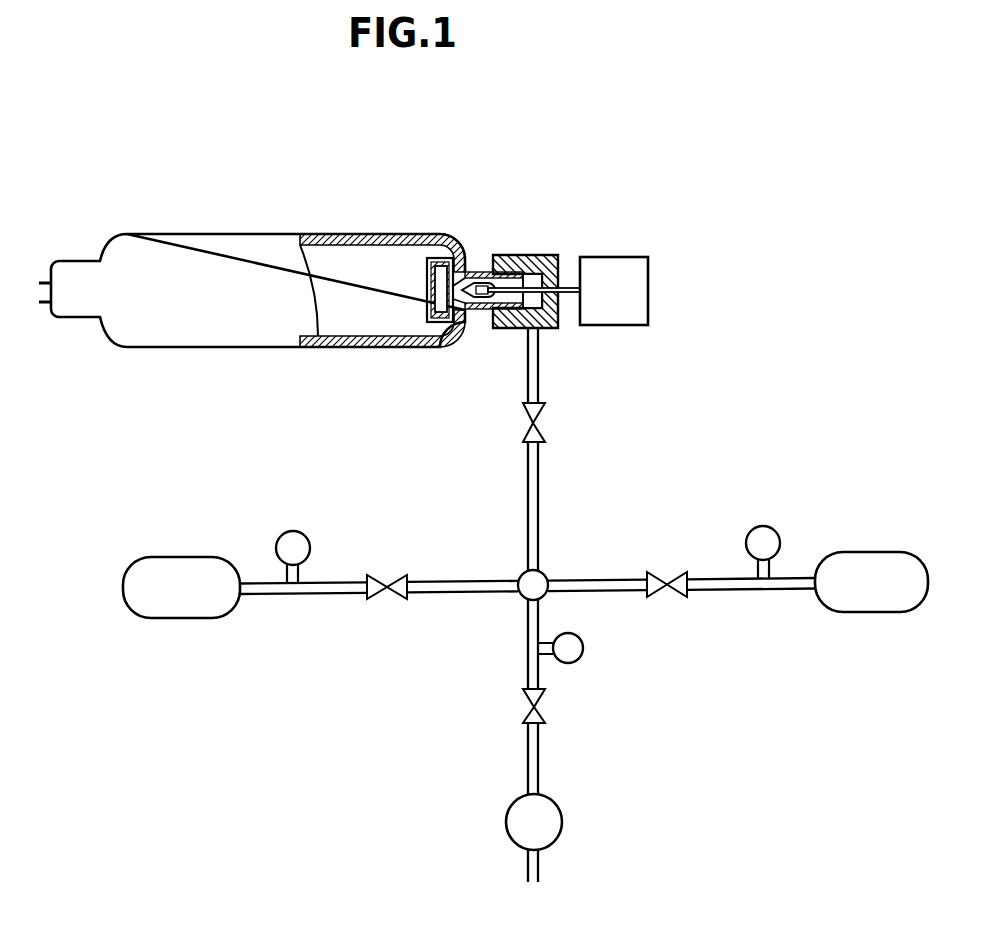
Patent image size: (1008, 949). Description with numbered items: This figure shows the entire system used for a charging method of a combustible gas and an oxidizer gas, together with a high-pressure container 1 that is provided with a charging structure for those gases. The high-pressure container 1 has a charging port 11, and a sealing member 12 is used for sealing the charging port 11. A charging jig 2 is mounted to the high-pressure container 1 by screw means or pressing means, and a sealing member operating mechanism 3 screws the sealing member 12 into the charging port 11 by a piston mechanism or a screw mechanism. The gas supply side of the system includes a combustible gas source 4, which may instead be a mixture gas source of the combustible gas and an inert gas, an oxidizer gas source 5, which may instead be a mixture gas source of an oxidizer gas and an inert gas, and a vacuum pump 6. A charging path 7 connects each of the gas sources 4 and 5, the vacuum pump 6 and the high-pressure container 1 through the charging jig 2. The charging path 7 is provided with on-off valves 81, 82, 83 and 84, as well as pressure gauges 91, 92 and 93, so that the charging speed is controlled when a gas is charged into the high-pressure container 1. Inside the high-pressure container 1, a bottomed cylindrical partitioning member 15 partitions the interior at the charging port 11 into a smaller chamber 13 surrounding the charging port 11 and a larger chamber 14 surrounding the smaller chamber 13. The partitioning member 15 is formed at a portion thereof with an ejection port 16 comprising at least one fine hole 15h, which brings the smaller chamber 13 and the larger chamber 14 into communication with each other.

The high-pressure container 1 is at (187, 229).
The charging jig 2 is at (545, 255).
The sealing member operating mechanism 3 is at (620, 268).
The combustible gas source 4 is at (860, 612).
The oxidizer gas source 5 is at (185, 618).
The vacuum pump 6 is at (563, 815).
The charging path 7 is at (530, 513).
The charging port 11 is at (470, 270).
The sealing member 12 is at (482, 287).
The smaller chamber 13 is at (437, 258).
The larger chamber 14 is at (318, 253).
The partitioning member 15 is at (428, 292).
The fine hole 15h is at (450, 318).
The ejection port 16 is at (440, 262).
The on-off valve 81 is at (543, 423).
The on-off valve 82 is at (397, 599).
The on-off valve 83 is at (680, 589).
The on-off valve 84 is at (542, 710).
The pressure gauge 91 is at (298, 531).
The pressure gauge 92 is at (773, 527).
The pressure gauge 93 is at (587, 650).